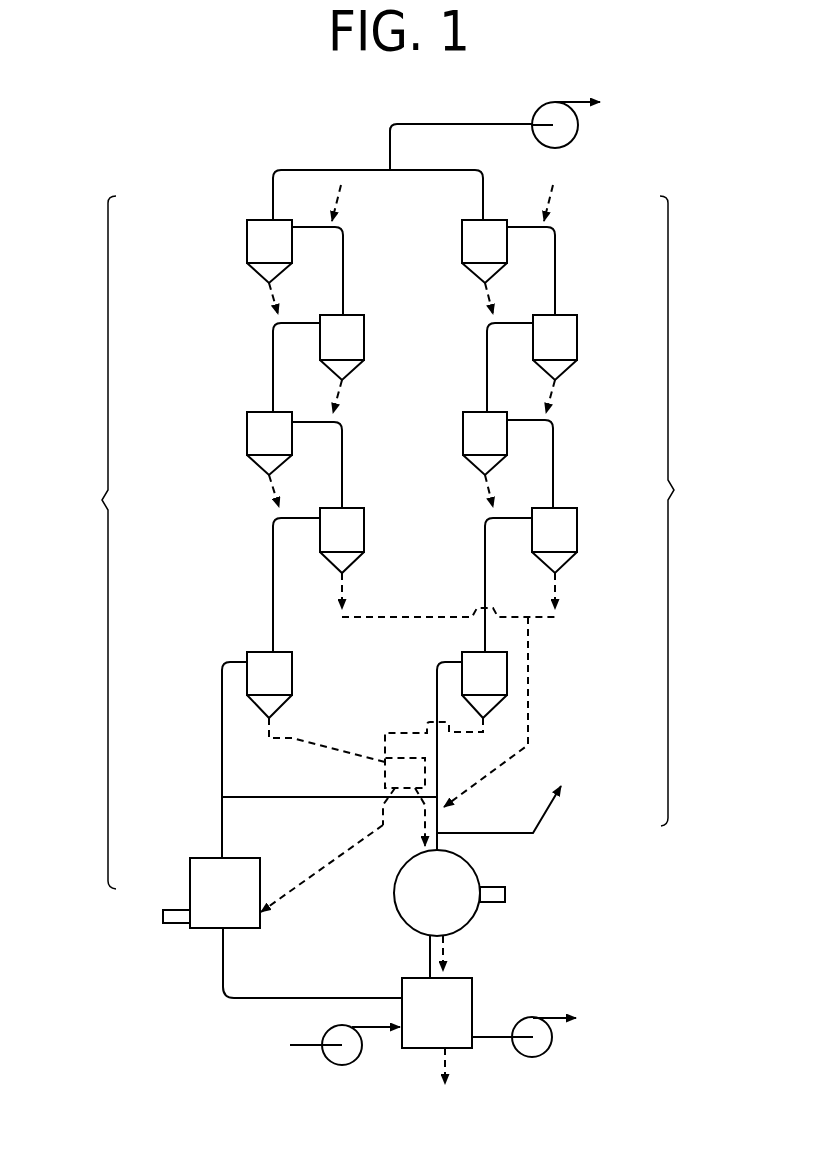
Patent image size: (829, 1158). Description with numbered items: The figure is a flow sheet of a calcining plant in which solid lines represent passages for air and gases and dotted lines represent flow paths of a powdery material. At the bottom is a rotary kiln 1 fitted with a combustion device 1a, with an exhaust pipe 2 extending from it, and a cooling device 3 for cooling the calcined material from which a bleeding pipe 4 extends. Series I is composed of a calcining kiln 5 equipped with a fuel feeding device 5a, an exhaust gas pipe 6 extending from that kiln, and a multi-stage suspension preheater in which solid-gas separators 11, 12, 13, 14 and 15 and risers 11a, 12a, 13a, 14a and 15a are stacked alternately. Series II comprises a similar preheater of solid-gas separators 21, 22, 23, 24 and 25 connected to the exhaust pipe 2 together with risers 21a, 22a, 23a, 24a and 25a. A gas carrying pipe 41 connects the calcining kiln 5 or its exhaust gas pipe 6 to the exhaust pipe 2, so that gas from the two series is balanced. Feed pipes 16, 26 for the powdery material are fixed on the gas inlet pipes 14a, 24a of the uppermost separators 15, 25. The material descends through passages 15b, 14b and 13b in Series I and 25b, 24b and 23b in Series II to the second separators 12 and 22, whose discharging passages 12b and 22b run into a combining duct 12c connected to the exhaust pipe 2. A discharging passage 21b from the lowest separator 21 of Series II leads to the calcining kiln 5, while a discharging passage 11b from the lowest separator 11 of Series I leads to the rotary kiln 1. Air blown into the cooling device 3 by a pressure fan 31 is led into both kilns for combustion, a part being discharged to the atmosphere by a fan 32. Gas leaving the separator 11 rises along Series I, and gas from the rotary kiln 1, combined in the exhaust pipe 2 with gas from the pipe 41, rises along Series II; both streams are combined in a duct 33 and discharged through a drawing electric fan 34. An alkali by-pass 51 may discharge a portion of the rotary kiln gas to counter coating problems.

The rotary kiln 1 is at (437, 914).
The combustion device 1a is at (506, 896).
The exhaust pipe 2 is at (438, 761).
The cooling device 3 is at (437, 1031).
The bleeding pipe 4 is at (287, 997).
The calcining kiln 5 is at (225, 893).
The fuel feeding device 5a is at (174, 924).
The exhaust gas pipe 6 is at (221, 747).
The solid-gas separator 11 is at (269, 685).
The riser 11a is at (272, 571).
The powdery material discharging passage 11b is at (292, 748).
The solid-gas separator 12 is at (342, 540).
The riser 12a is at (343, 474).
The powdery material discharging passage 12b is at (345, 577).
The combining duct 12c is at (529, 666).
The solid-gas separator 13 is at (269, 443).
The riser 13a is at (272, 355).
The powdery material passage 13b is at (268, 496).
The solid-gas separator 14 is at (342, 347).
The riser 14a is at (343, 280).
The powdery material passage 14b is at (340, 401).
The solid-gas separator 15 is at (269, 251).
The riser 15a is at (272, 194).
The powdery material passage 15b is at (268, 299).
The feed pipe 16 is at (334, 205).
The solid-gas separator 21 is at (484, 685).
The riser 21a is at (484, 570).
The powdery material discharging passage 21b is at (314, 872).
The solid-gas separator 22 is at (554, 540).
The riser 22a is at (555, 474).
The powdery material discharging passage 22b is at (558, 577).
The solid-gas separator 23 is at (485, 443).
The riser 23a is at (486, 355).
The powdery material passage 23b is at (486, 496).
The solid-gas separator 24 is at (555, 347).
The riser 24a is at (556, 280).
The powdery material passage 24b is at (553, 401).
The solid-gas separator 25 is at (484, 251).
The riser 25a is at (482, 194).
The powdery material passage 25b is at (484, 300).
The feed pipe 26 is at (546, 205).
The pressure fan 31 is at (349, 1056).
The fan 32 is at (538, 1049).
The duct 33 is at (389, 131).
The drawing electric fan 34 is at (578, 128).
The gas carrying pipe 41 is at (300, 797).
The alkali by-pass 51 is at (555, 803).
The Series I is at (90, 542).
The Series II is at (686, 511).